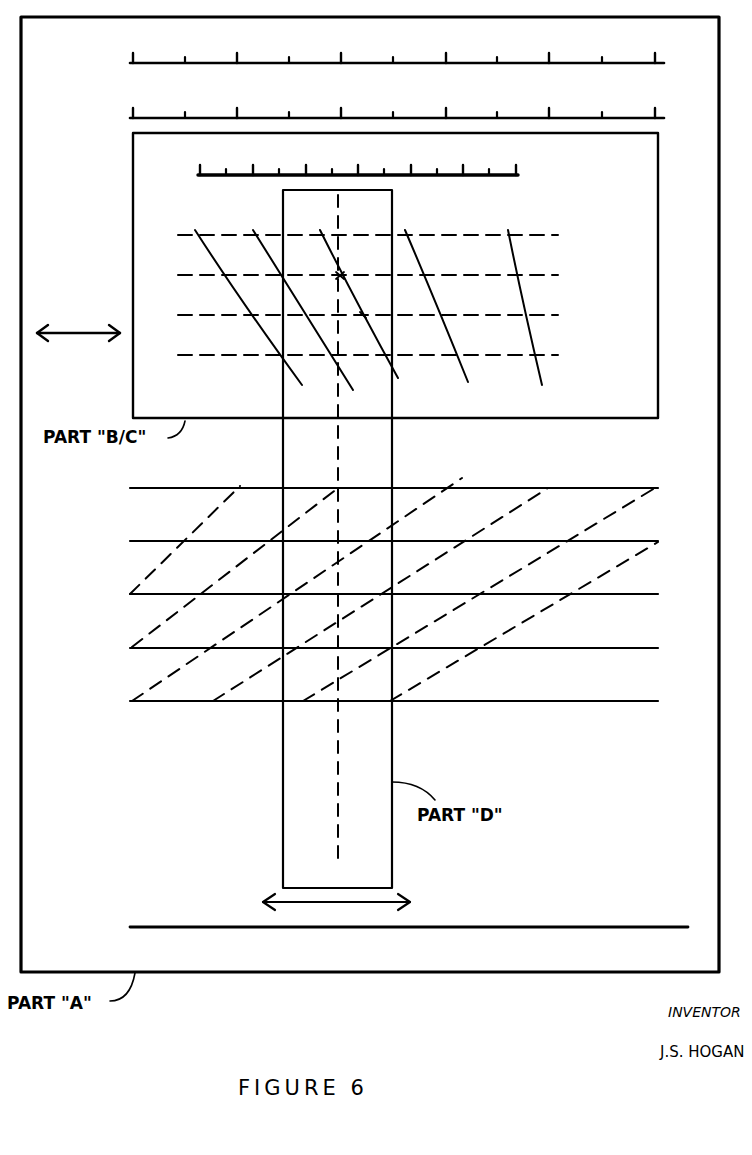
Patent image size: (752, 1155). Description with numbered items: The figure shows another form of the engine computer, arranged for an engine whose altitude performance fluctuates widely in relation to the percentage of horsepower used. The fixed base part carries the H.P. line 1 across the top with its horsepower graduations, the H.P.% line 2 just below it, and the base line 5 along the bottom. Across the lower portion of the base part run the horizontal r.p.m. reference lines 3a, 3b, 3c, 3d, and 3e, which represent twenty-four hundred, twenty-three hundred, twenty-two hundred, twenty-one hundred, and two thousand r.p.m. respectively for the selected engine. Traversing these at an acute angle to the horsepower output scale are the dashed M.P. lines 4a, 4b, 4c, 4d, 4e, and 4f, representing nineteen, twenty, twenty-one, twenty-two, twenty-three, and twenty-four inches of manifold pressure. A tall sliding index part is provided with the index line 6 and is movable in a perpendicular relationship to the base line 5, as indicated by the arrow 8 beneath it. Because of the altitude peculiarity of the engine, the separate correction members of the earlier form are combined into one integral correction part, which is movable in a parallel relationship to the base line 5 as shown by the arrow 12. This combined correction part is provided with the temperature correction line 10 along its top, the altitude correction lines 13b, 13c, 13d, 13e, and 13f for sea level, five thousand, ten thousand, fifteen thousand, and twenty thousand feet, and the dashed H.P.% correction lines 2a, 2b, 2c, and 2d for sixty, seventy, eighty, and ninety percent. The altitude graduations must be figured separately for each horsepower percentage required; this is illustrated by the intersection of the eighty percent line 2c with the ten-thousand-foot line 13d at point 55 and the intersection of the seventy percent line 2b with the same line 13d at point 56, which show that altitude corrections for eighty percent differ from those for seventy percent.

The H.P. line 1 is at (130, 63).
The H.P.% line 2 is at (130, 118).
The temperature correction line 10 is at (494, 177).
The arrow 12 is at (68, 336).
The H.P.% correction line 2a is at (209, 360).
The H.P.% correction line 2b is at (207, 320).
The H.P.% correction line 2c is at (205, 280).
The H.P.% correction line 2d is at (202, 240).
The altitude correction line 13b is at (301, 384).
The altitude correction line 13c is at (351, 389).
The altitude correction line 13d is at (397, 377).
The altitude correction line 13e is at (467, 381).
The altitude correction line 13f is at (541, 384).
The point 55 is at (343, 278).
The point 56 is at (362, 316).
The r.p.m. reference line 3a is at (151, 490).
The r.p.m. reference line 3b is at (149, 543).
The r.p.m. reference line 3c is at (148, 596).
The r.p.m. reference line 3d is at (151, 650).
The r.p.m. reference line 3e is at (160, 703).
The M.P. line 4a is at (200, 521).
The M.P. line 4b is at (280, 535).
The M.P. line 4c is at (388, 530).
The M.P. line 4d is at (494, 526).
The M.P. line 4e is at (594, 529).
The M.P. line 4f is at (618, 575).
The index line 6 is at (338, 722).
The arrow 8 is at (352, 905).
The base line 5 is at (135, 929).